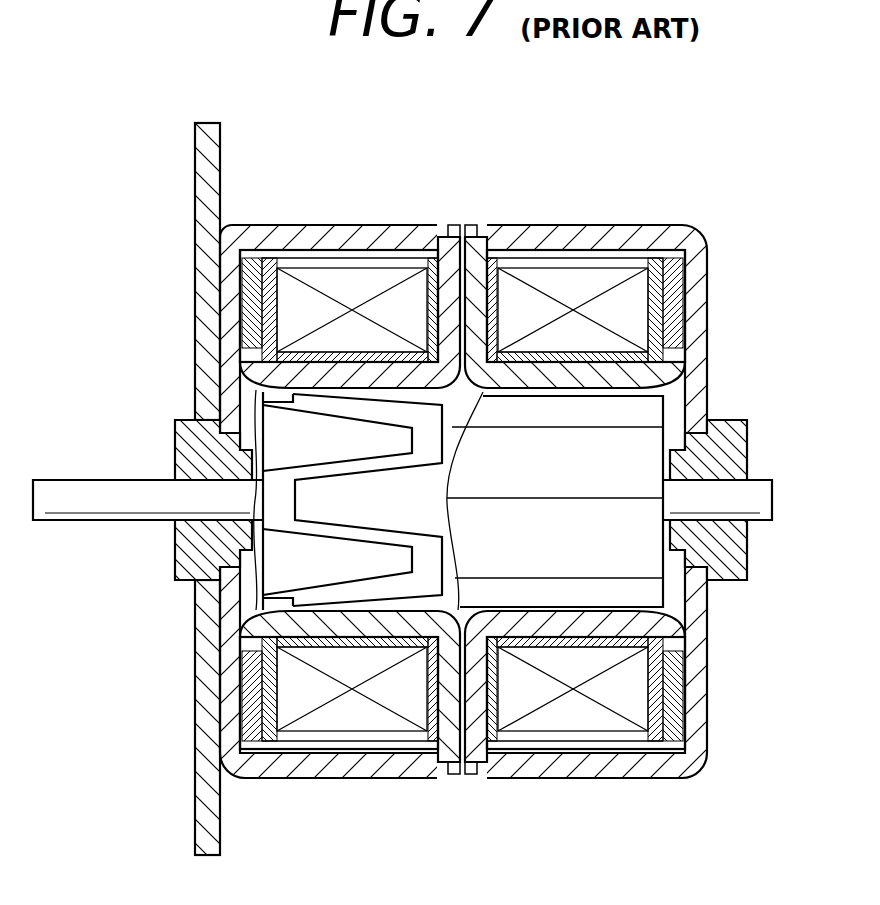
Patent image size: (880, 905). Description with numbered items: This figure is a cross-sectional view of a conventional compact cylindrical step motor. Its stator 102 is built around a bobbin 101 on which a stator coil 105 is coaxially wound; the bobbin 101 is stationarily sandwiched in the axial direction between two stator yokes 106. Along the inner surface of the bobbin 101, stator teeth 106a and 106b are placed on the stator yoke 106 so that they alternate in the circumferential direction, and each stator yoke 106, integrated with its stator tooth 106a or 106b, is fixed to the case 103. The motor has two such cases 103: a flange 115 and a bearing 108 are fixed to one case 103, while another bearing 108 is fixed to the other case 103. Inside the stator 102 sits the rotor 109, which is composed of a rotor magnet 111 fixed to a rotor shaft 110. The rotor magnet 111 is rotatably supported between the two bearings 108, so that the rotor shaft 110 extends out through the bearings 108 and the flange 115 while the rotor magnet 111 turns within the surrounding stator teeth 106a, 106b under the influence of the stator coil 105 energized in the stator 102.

The bobbin 101 is at (433, 252).
The stator 102 is at (466, 459).
The case 103 is at (232, 226).
The stator coil 105 is at (373, 277).
The stator yoke 106 is at (252, 257).
The stator tooth 106a is at (268, 567).
The stator tooth 106b is at (302, 497).
The bearing 108 is at (182, 435).
The rotor 109 is at (667, 410).
The rotor shaft 110 is at (117, 488).
The rotor magnet 111 is at (643, 565).
The flange 115 is at (200, 158).